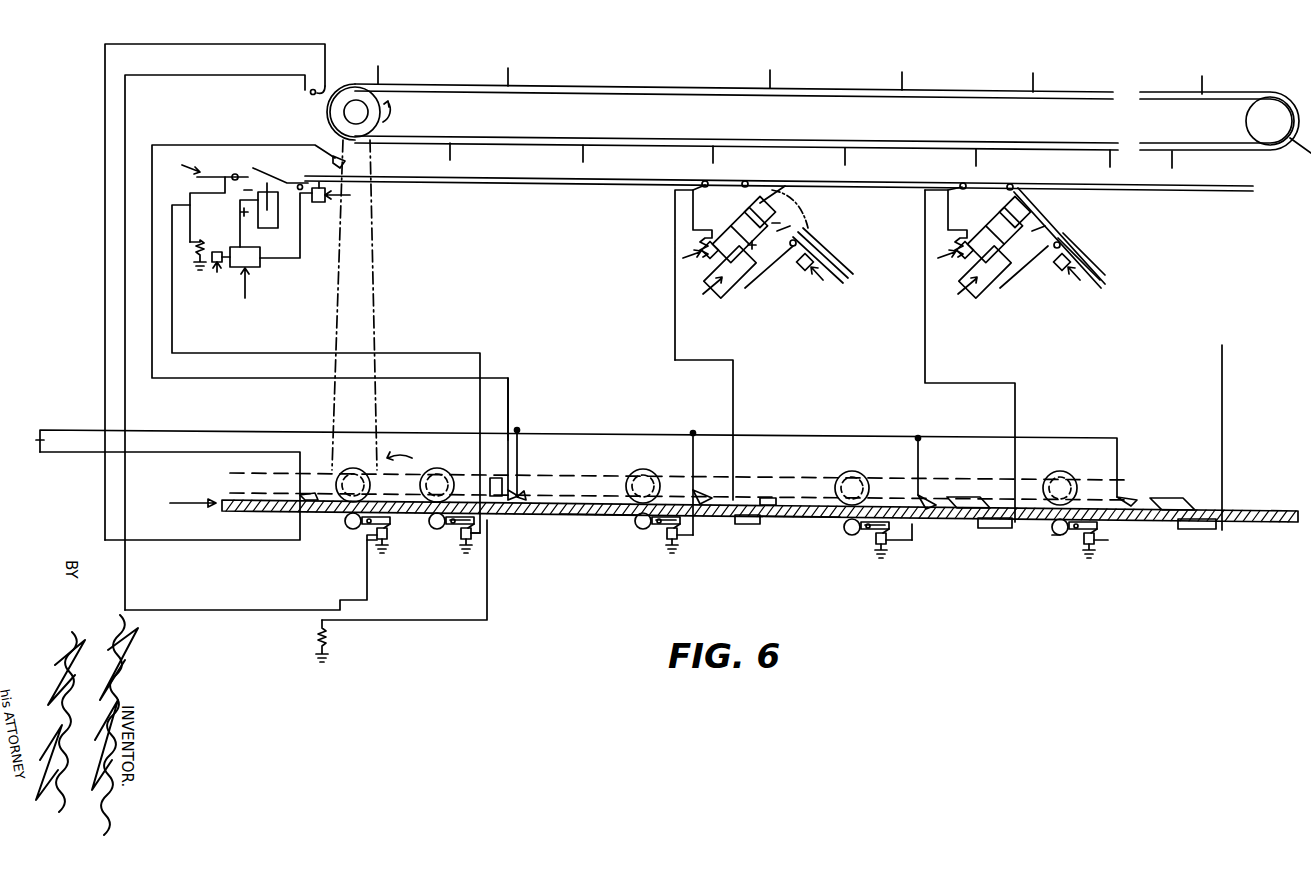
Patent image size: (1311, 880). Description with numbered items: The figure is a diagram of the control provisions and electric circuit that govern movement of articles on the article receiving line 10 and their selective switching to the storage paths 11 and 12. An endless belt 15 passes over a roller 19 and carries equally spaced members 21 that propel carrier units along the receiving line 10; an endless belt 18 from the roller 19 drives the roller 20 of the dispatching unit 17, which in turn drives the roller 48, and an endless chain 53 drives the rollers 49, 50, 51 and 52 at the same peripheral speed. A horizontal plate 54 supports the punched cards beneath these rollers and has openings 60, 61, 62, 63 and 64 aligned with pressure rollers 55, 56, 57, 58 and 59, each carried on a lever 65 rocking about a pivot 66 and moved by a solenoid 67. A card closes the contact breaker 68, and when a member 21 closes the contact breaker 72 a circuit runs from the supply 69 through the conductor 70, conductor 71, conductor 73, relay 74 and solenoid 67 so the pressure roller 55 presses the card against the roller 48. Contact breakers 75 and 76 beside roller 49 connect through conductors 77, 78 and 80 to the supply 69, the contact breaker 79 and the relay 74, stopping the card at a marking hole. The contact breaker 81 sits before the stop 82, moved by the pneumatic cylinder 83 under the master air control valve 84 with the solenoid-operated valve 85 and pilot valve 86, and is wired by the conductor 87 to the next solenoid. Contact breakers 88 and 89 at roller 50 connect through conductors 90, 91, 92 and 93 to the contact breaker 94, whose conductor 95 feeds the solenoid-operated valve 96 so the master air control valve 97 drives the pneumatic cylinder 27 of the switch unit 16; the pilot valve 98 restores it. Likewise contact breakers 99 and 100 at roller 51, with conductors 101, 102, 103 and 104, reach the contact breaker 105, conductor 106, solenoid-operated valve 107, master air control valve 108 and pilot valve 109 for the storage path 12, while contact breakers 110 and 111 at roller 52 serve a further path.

The article receiving line 10 is at (533, 188).
The storage path 11 is at (838, 285).
The storage path 12 is at (1095, 286).
The endless belt 15 is at (830, 91).
The switch unit 16 is at (772, 185).
The dispatching unit 17 is at (804, 528).
The endless belt 18 is at (378, 325).
The roller 19 is at (355, 86).
The roller 20 is at (377, 460).
The members 21 is at (380, 73).
The pneumatic cylinder 27 is at (740, 220).
The roller 48 is at (338, 480).
The roller 49 is at (445, 472).
The roller 50 is at (644, 469).
The roller 51 is at (855, 471).
The roller 52 is at (1062, 471).
The endless chain 53 is at (593, 484).
The horizontal plate 54 is at (593, 513).
The pressure roller 55 is at (345, 523).
The pressure roller 56 is at (455, 526).
The pressure roller 57 is at (660, 526).
The pressure roller 58 is at (852, 536).
The pressure roller 59 is at (1060, 537).
The opening 60 is at (296, 521).
The opening 61 is at (436, 530).
The opening 62 is at (640, 530).
The opening 63 is at (845, 522).
The opening 64 is at (1055, 522).
The lever 65 is at (450, 526).
The pivot 66 is at (370, 533).
The actuating member 67 is at (377, 543).
The contact breaker 68 is at (300, 494).
The source of electrical supply 69 is at (40, 440).
The conductor 70 is at (183, 457).
The conductor 71 is at (105, 316).
The contact breaker 72 is at (315, 96).
The conductor 73 is at (127, 402).
The relay 74 is at (333, 648).
The contact breaker 75 is at (528, 506).
The contact breaker 76 is at (500, 510).
The conductor 77 is at (520, 453).
The conductor 78 is at (247, 382).
The contact breaker 79 is at (332, 154).
The conductor 80 is at (488, 608).
The contact breaker 81 is at (234, 175).
The stop 82 is at (258, 167).
The pneumatic cylinder 83 is at (278, 214).
The master air control valve 84 is at (262, 262).
The solenoid-operated valve 85 is at (203, 263).
The pilot valve 86 is at (332, 179).
The conductor 87 is at (274, 352).
The contact breaker 88 is at (705, 495).
The contact breaker 89 is at (767, 498).
The conductor 90 is at (693, 431).
The conductor 91 is at (697, 537).
The conductor 92 is at (749, 525).
The conductor 93 is at (733, 362).
The contact breaker 94 is at (708, 183).
The conductor 95 is at (675, 230).
The solenoid-operated valve 96 is at (690, 258).
The master air control valve 97 is at (738, 288).
The pilot valve 98 is at (800, 238).
The contact breaker 99 is at (927, 500).
The contact breaker 100 is at (962, 496).
The conductor 101 is at (918, 438).
The conductor 102 is at (913, 540).
The conductor 103 is at (990, 528).
The conductor 104 is at (945, 383).
The contact breaker 105 is at (963, 183).
The conductor 106 is at (925, 232).
The solenoid-operated valve 107 is at (945, 258).
The master air control valve 108 is at (993, 288).
The pilot valve 109 is at (1070, 242).
The contact breaker 110 is at (1130, 497).
The contact breaker 111 is at (1170, 498).